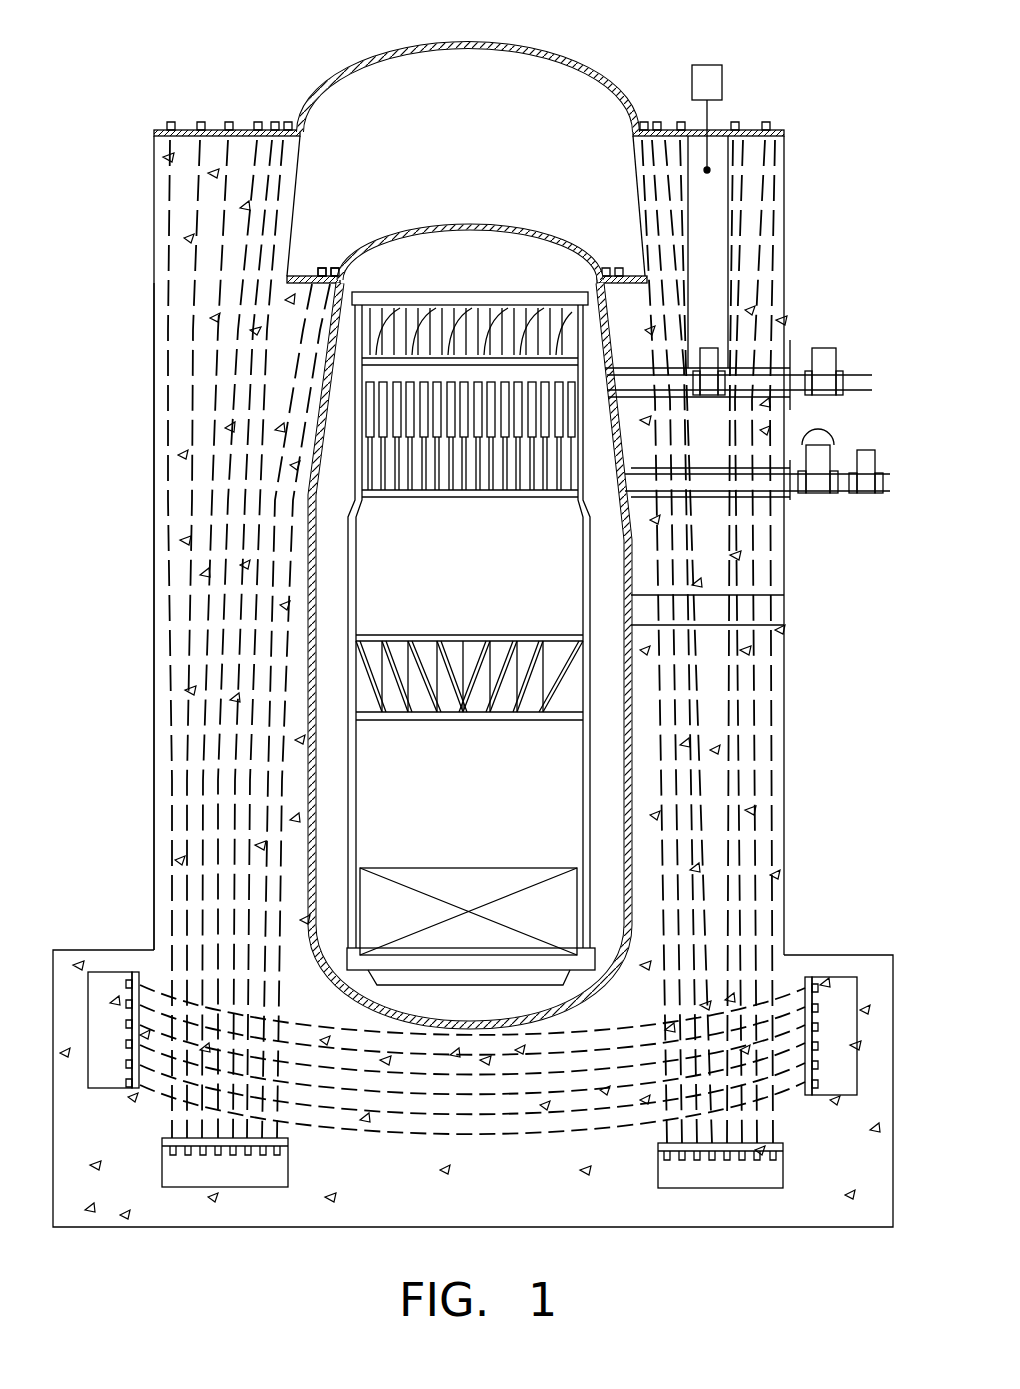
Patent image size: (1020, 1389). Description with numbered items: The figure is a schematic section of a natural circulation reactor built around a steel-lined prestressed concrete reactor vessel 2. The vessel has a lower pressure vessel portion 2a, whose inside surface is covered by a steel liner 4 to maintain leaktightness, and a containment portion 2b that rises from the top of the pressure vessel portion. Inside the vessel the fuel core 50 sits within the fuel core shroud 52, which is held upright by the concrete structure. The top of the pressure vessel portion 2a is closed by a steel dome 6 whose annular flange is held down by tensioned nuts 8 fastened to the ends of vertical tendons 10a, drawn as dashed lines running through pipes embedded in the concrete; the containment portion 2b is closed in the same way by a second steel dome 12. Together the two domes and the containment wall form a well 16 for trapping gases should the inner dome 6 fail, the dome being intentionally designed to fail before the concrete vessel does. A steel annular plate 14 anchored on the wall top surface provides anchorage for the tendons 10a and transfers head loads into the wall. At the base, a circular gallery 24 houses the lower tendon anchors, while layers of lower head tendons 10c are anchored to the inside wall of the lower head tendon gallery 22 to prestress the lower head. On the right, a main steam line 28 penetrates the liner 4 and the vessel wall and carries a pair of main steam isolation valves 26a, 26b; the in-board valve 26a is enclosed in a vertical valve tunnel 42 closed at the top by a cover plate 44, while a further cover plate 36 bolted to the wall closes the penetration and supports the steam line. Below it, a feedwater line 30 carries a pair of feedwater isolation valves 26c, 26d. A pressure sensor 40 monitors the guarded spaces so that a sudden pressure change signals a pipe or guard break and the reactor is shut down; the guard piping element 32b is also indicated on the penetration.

The prestressed concrete reactor vessel 2 is at (423, 545).
The pressure vessel portion 2a is at (153, 502).
The containment portion 2b is at (157, 197).
The steel liner 4 is at (316, 636).
The steel dome 6 is at (455, 228).
The tensioned nuts 8 is at (330, 268).
The vertical tendons 10a is at (195, 271).
The lower head tendons 10c is at (470, 1133).
The steel dome 12 is at (388, 46).
The steel annular plate 14 is at (183, 130).
The well 16 is at (492, 117).
The lower head tendon gallery 22 is at (120, 972).
The circular gallery 24 is at (748, 1186).
The in-board main steam isolation valve 26a is at (710, 348).
The main steam isolation valve 26b is at (825, 347).
The feedwater isolation valve 26c is at (800, 438).
The feedwater isolation valve 26d is at (864, 450).
The main steam line 28 is at (658, 382).
The feedwater line 30 is at (787, 494).
The pipe penetration 32b is at (792, 498).
The cover plate 36 is at (803, 345).
The pressure sensor 40 is at (692, 80).
The valve tunnel 42 is at (708, 232).
The cover plate 44 is at (720, 130).
The fuel core 50 is at (452, 868).
The fuel core shroud 52 is at (362, 780).